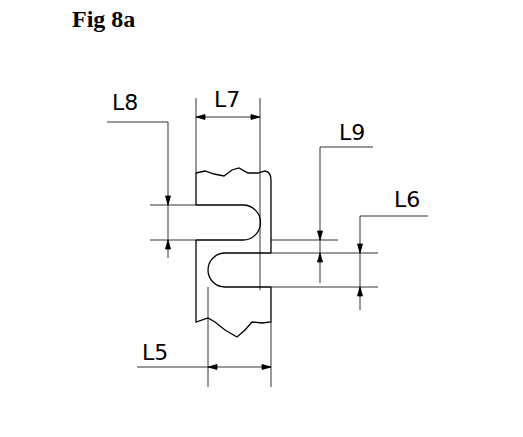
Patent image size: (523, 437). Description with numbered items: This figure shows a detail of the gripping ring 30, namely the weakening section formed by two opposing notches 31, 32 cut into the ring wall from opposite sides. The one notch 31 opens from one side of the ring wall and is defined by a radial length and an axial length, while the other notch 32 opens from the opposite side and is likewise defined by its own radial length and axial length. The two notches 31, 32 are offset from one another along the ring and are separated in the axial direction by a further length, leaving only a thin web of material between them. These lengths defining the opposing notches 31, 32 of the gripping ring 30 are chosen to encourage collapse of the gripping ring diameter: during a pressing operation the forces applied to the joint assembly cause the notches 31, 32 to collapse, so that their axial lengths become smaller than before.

The gripping ring 30 is at (255, 310).
The notch 31 is at (224, 221).
The notch 32 is at (255, 295).